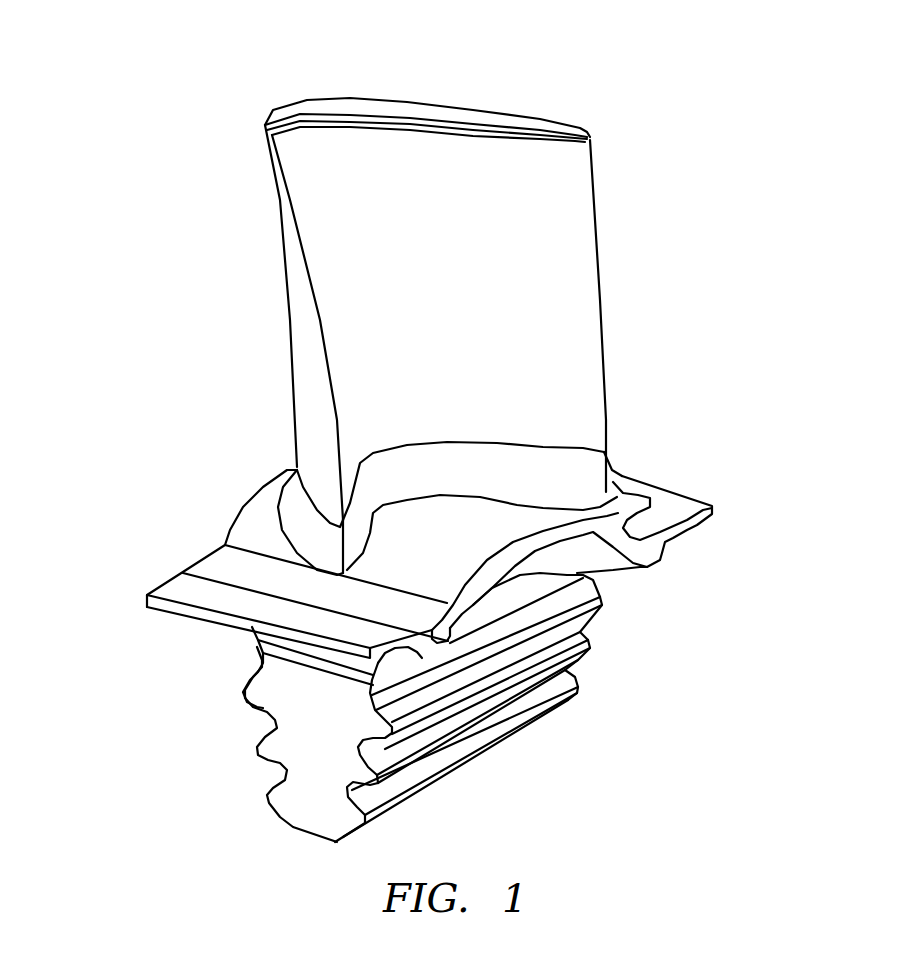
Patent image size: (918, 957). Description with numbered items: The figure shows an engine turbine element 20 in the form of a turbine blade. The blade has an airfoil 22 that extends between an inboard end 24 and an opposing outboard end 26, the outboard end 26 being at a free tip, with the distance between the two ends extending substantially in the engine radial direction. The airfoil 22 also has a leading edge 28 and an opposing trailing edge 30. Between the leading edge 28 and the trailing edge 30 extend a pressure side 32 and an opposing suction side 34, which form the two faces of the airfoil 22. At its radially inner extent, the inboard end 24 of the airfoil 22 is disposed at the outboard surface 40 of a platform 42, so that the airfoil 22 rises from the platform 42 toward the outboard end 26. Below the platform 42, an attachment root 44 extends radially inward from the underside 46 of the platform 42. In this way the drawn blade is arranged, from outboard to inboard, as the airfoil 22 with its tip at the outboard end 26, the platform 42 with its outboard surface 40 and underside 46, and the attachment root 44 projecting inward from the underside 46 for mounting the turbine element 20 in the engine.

The engine turbine element 20 is at (403, 452).
The airfoil 22 is at (330, 320).
The inboard end 24 is at (532, 467).
The outboard end 26 is at (497, 103).
The leading edge 28 is at (335, 398).
The trailing edge 30 is at (600, 273).
The pressure side 32 is at (537, 210).
The suction side 34 is at (280, 252).
The outboard surface 40 is at (490, 530).
The platform 42 is at (643, 525).
The attachment root 44 is at (592, 672).
The underside 46 is at (399, 659).